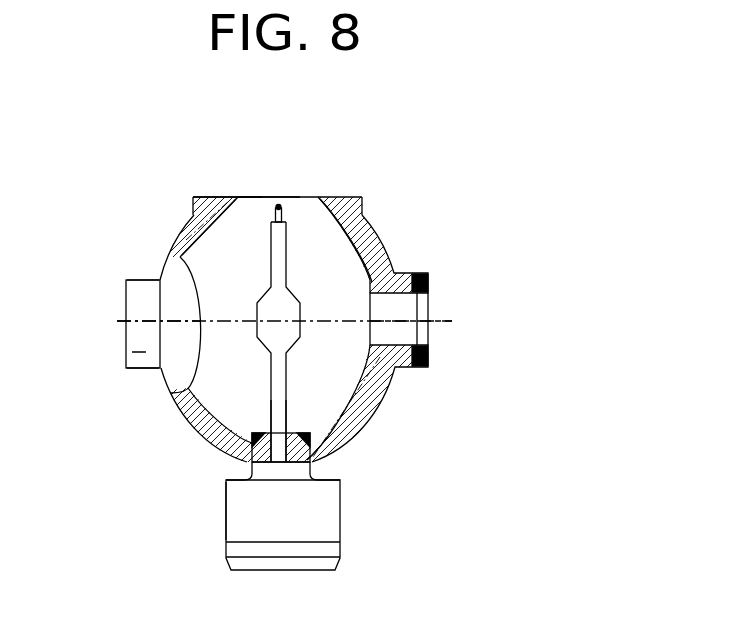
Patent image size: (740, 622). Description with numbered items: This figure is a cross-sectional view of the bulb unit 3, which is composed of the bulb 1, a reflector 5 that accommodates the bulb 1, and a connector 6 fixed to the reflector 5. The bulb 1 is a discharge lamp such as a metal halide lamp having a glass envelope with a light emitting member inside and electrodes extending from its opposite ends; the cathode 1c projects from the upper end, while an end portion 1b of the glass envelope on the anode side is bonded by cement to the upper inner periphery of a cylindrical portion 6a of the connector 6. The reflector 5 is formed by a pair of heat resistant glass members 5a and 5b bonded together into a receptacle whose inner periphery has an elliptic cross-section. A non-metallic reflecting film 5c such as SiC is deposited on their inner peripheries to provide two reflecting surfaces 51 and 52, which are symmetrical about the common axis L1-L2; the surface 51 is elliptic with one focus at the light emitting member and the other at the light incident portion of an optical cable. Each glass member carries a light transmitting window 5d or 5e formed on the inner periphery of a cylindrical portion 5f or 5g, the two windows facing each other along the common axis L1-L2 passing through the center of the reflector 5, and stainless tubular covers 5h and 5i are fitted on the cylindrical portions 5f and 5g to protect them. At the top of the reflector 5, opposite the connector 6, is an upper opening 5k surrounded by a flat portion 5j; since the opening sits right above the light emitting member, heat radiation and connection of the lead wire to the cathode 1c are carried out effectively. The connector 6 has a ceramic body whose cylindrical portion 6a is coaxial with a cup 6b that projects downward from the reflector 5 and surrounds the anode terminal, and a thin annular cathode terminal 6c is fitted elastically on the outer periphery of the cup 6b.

The bulb unit 3 is at (395, 188).
The reflector 5 is at (368, 236).
The heat resistant glass member 5a is at (197, 200).
The heat resistant glass member 5b is at (353, 197).
The non-metallic reflecting film 5c is at (315, 197).
The light transmitting window 5d is at (126, 297).
The light transmitting window 5e is at (393, 307).
The cylindrical portion 5f is at (145, 279).
The cylindrical portion 5g is at (408, 276).
The stainless tubular cover 5h is at (145, 352).
The stainless tubular cover 5i is at (432, 356).
The flat portion 5j is at (225, 198).
The upper opening 5k is at (257, 200).
The reflecting surface 51 is at (200, 203).
The reflecting surface 52 is at (357, 247).
The bulb 1 is at (287, 288).
The end portion of the glass envelope 1b is at (284, 412).
The cathode 1c is at (279, 204).
The common axis L1 is at (120, 323).
The common axis L2 is at (440, 321).
The connector 6 is at (345, 508).
The cylindrical portion 6a is at (310, 437).
The cup 6b is at (318, 550).
The annular cathode terminal 6c is at (235, 522).